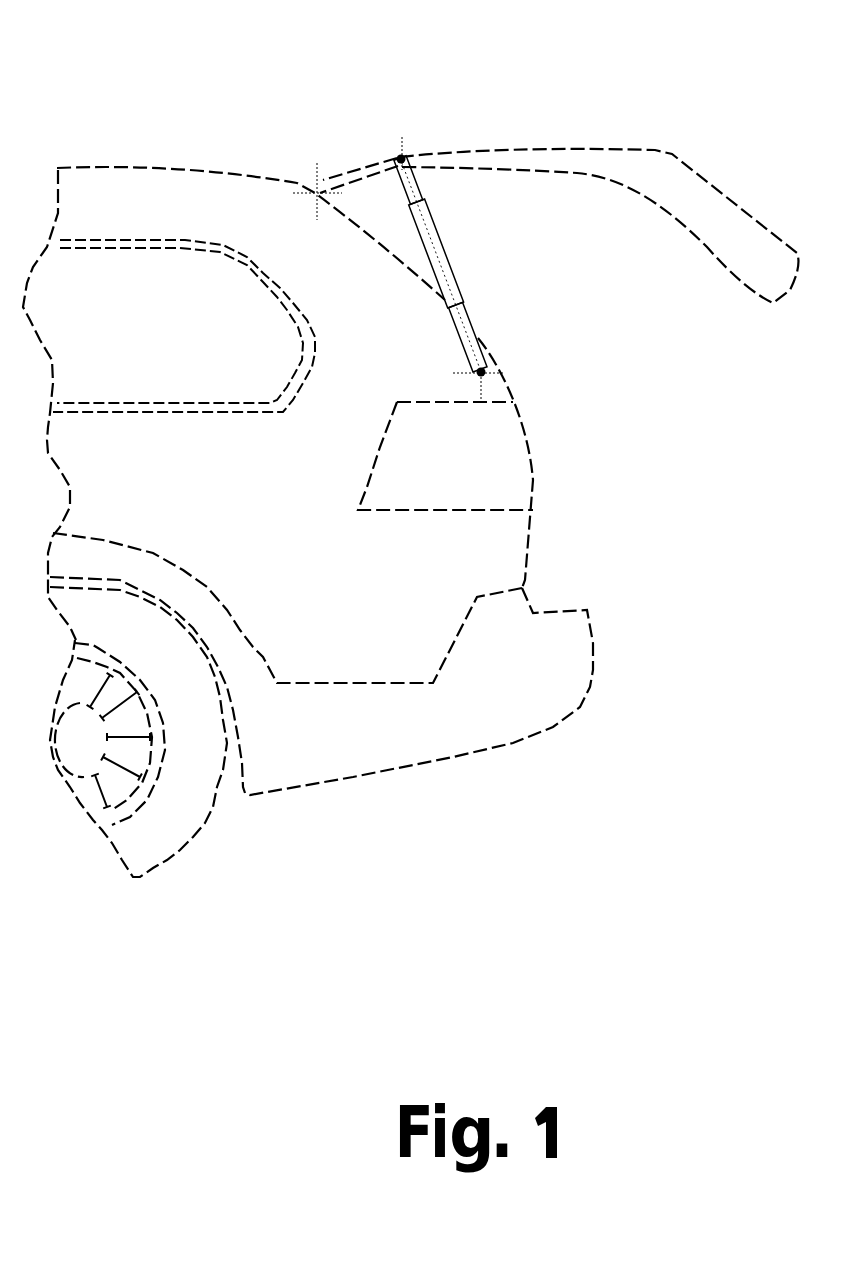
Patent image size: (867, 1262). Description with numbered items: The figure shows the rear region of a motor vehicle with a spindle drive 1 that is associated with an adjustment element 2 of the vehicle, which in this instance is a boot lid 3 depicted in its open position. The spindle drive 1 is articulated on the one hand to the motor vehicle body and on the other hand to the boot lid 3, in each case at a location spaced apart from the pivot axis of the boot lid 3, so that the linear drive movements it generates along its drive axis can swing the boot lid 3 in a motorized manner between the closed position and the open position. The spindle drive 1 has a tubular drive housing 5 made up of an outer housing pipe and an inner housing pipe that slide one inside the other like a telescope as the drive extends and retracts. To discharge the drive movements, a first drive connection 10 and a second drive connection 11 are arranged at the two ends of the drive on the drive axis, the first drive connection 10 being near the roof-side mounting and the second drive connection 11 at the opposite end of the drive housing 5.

The spindle drive 1 is at (558, 274).
The adjustment element 2 is at (559, 156).
The boot lid 3 is at (653, 150).
The tubular drive housing 5 is at (452, 280).
The first drive connection 10 is at (402, 157).
The second drive connection 11 is at (485, 376).